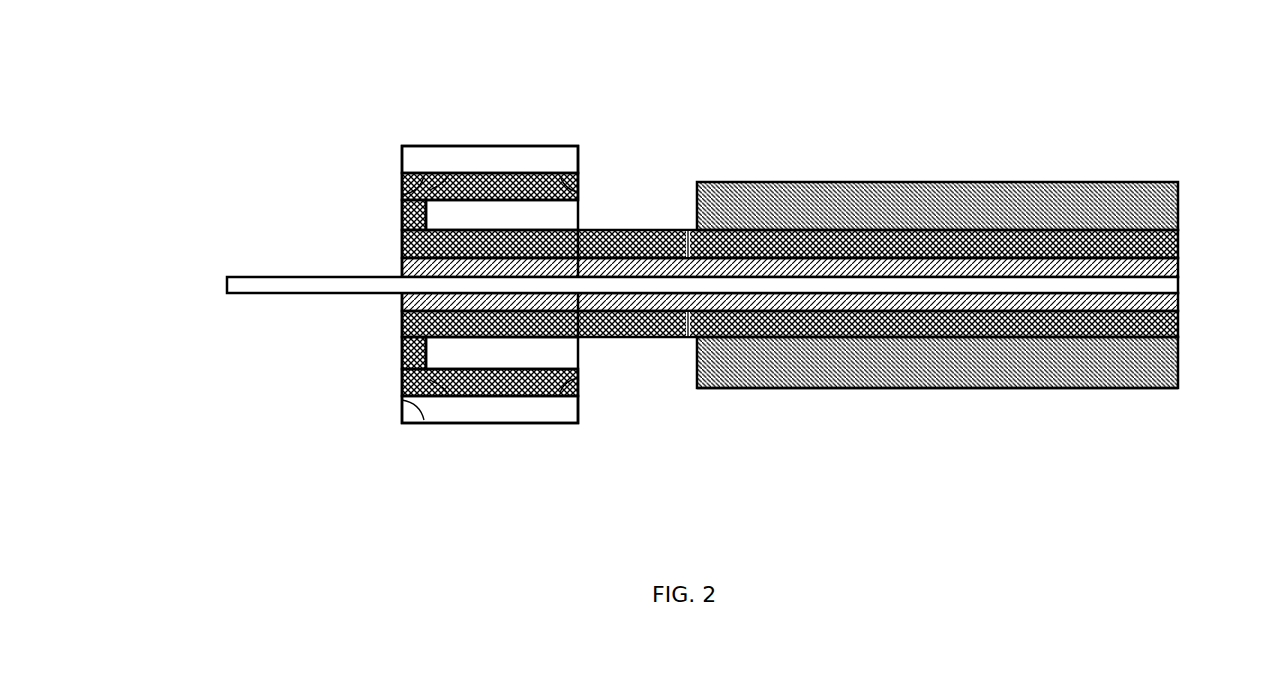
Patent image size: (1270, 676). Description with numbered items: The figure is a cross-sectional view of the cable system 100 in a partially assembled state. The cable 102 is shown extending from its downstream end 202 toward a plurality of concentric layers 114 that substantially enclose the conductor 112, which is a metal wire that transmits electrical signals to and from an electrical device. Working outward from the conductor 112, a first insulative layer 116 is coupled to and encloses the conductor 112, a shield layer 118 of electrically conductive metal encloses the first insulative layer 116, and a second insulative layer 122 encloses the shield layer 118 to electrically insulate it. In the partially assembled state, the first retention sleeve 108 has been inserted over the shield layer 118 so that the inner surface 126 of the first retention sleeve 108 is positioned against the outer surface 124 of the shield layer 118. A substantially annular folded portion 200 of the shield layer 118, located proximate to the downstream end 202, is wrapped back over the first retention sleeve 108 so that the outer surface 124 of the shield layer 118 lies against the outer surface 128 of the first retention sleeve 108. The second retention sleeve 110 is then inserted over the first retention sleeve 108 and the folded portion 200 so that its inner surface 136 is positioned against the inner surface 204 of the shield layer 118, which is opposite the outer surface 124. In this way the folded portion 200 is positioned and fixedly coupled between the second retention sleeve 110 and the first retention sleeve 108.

The cable system 100 is at (838, 60).
The cable 102 is at (996, 158).
The first retention sleeve 108 is at (578, 208).
The second retention sleeve 110 is at (578, 158).
The conductor 112 is at (275, 295).
The concentric layers 114 is at (874, 402).
The first insulative layer 116 is at (1180, 267).
The shield layer 118 is at (1180, 242).
The second insulative layer 122 is at (1180, 198).
The outer surface of shield layer 124 is at (526, 200).
The inner surface of first retention sleeve 126 is at (484, 236).
The outer surface of first retention sleeve 128 is at (578, 180).
The inner surface of second retention sleeve 136 is at (402, 184).
The folded portion of shield layer 200 is at (402, 222).
The downstream end of cable 202 is at (283, 184).
The inner surface of shield layer 204 is at (440, 185).